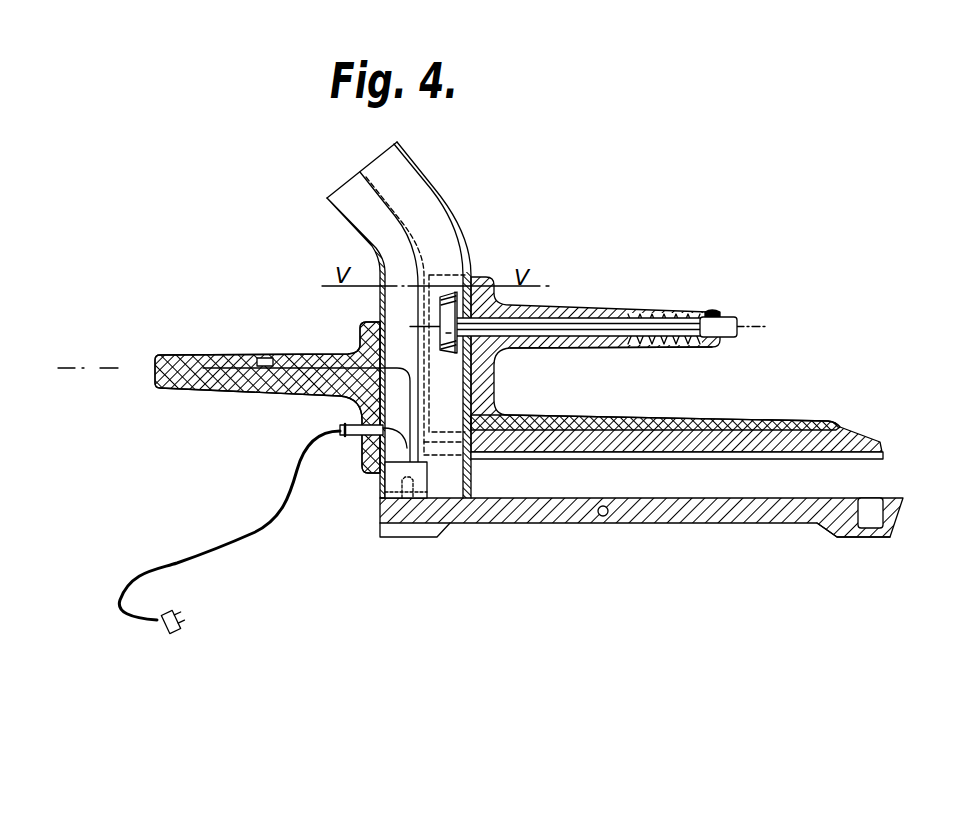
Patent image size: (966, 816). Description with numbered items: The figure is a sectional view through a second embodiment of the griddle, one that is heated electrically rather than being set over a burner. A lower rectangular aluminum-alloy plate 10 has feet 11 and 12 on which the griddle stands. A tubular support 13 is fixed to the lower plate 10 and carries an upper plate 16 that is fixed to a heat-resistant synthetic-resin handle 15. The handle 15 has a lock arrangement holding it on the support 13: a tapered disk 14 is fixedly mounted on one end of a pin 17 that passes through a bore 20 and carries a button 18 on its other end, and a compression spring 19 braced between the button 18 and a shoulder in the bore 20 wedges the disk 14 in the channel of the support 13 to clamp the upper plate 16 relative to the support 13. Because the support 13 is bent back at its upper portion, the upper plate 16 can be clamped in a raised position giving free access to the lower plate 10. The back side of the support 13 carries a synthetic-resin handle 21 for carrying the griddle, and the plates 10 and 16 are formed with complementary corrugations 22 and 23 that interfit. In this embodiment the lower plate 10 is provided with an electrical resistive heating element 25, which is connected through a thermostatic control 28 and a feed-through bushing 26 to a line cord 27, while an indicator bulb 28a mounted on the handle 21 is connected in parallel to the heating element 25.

The lower plate 10 is at (787, 522).
The foot 11 is at (412, 528).
The foot 12 is at (888, 536).
The tubular support 13 is at (383, 262).
The tapered disk 14 is at (456, 305).
The handle 15 is at (667, 308).
The upper plate 16 is at (837, 440).
The pin 17 is at (571, 326).
The button 18 is at (737, 322).
The compression spring 19 is at (677, 345).
The bore 20 is at (637, 312).
The handle 21 is at (185, 380).
The corrugations 22 is at (746, 497).
The corrugations 23 is at (658, 460).
The electrical resistive heating element 25 is at (632, 523).
The feed-through bushing 26 is at (340, 438).
The line cord 27 is at (257, 535).
The thermostatic control 28 is at (402, 470).
The indicator bulb 28a is at (266, 362).